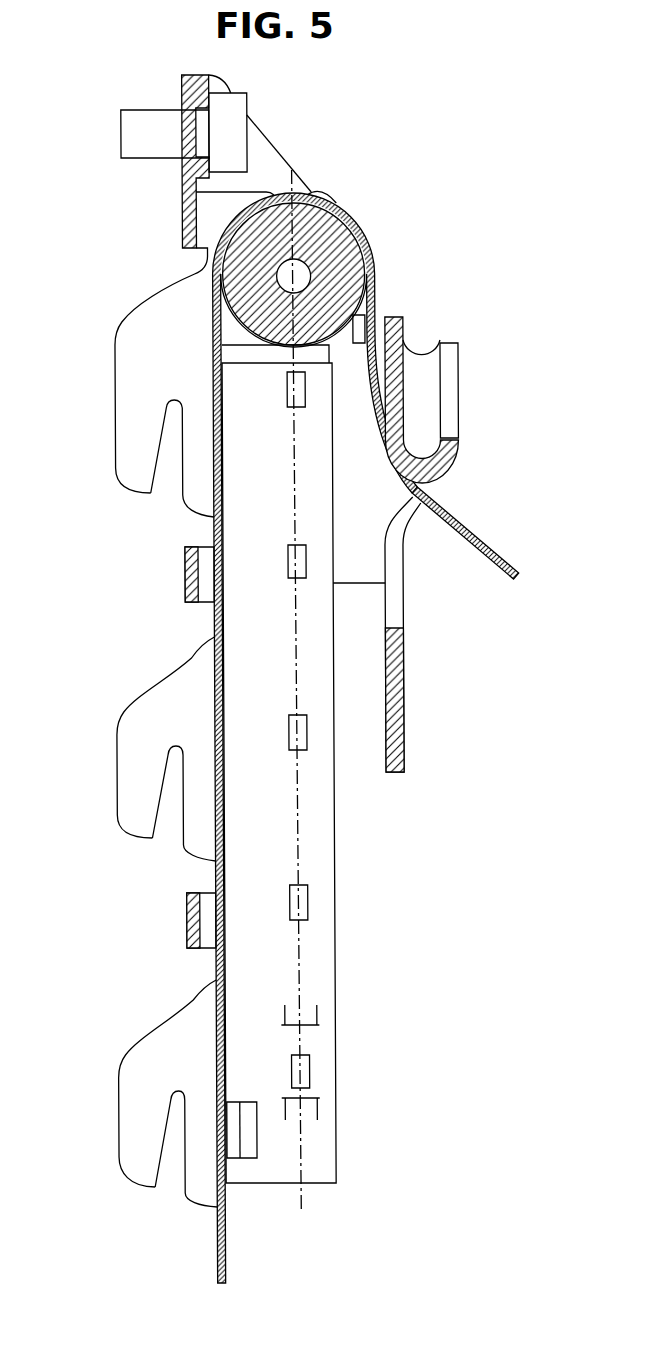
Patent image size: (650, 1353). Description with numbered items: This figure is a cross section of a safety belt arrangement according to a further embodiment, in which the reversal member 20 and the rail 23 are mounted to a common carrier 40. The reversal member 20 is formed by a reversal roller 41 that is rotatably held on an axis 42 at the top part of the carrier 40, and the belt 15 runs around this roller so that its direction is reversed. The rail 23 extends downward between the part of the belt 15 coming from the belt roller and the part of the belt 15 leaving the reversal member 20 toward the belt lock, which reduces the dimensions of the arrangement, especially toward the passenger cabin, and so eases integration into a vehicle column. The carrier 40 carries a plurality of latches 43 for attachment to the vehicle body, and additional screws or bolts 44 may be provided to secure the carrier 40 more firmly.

The belt 15 is at (213, 607).
The reversal member 20 is at (372, 243).
The rail 23 is at (318, 852).
The carrier 40 is at (168, 504).
The reversal roller 41 is at (340, 280).
The pulley shaft 42 is at (303, 263).
The latches 43 is at (125, 457).
The screws or bolts 44 is at (236, 117).